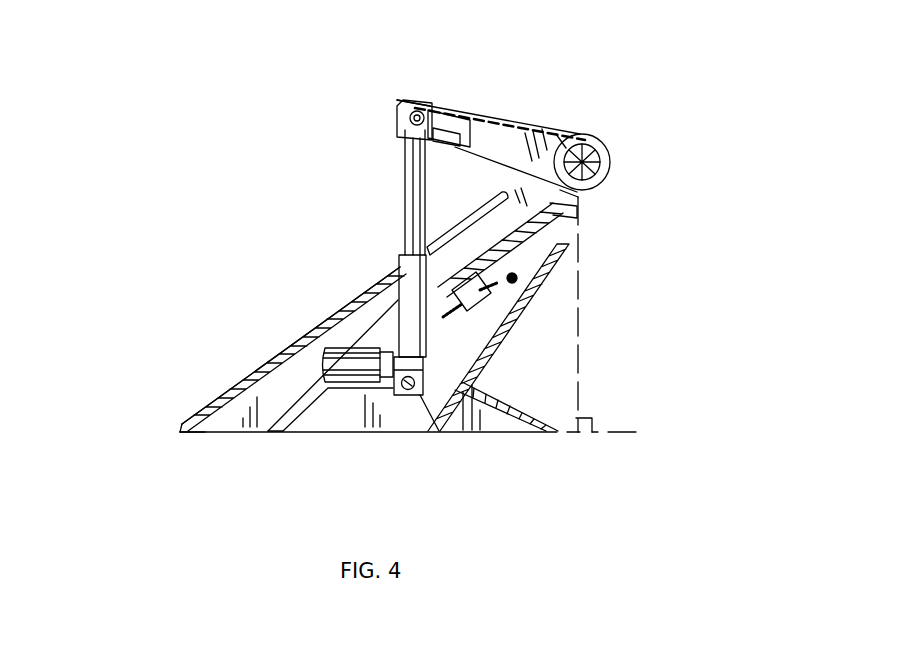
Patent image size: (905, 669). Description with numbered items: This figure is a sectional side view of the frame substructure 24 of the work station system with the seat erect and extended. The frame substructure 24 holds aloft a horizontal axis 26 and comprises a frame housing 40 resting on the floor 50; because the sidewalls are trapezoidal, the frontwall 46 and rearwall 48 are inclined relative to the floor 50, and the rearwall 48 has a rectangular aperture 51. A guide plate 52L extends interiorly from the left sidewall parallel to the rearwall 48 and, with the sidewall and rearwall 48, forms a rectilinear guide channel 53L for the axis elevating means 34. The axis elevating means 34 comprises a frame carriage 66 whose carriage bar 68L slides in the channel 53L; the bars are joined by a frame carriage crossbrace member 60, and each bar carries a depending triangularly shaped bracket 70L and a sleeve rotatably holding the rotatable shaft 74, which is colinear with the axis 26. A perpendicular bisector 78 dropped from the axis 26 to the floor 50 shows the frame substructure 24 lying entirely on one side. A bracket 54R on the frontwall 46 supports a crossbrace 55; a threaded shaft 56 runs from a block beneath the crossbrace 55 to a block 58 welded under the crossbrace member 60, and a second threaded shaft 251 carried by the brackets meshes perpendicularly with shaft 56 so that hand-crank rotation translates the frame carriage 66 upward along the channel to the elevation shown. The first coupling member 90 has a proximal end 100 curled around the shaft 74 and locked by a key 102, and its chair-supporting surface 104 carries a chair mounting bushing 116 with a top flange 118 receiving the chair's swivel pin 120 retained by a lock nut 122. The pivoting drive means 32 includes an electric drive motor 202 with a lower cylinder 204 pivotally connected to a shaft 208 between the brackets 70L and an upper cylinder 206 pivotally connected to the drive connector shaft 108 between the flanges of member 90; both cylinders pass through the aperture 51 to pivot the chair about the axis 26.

The frame substructure 24 is at (634, 320).
The horizontal axis 26 is at (605, 152).
The pivoting drive means 32 is at (345, 333).
The axis elevating means 34 is at (575, 197).
The frame housing 40 is at (203, 432).
The frontwall 46 is at (525, 388).
The rearwall 48 is at (185, 418).
The floor 50 is at (410, 433).
The aperture 51 is at (380, 278).
The guide plate 52L is at (280, 428).
The guide channel 53L is at (230, 422).
The bracket 54R is at (505, 262).
The crossbrace 55 is at (563, 233).
The threaded shaft 56 is at (530, 433).
The block 58 is at (573, 430).
The frame carriage crossbrace member 60 is at (548, 270).
The frame carriage 66 is at (305, 357).
The carriage bar 68L is at (323, 380).
The triangularly shaped bracket 70L is at (353, 390).
The rotatable shaft 74 is at (600, 142).
The perpendicular bisector 78 is at (530, 356).
The first coupling member 90 is at (502, 120).
The proximal end 100 is at (610, 160).
The key 102 is at (557, 132).
The chair-supporting surface 104 is at (487, 110).
The drive connector shaft 108 is at (410, 118).
The chair mounting bushing 116 is at (420, 97).
The top flange 118 is at (430, 105).
The swivel pin 120 is at (443, 147).
The lock nut 122 is at (425, 132).
The electric drive motor 202 is at (217, 403).
The lower cylinder 204 is at (408, 305).
The upper cylinder 206 is at (407, 210).
The shaft 208 is at (440, 433).
The second threaded shaft 251 is at (495, 297).